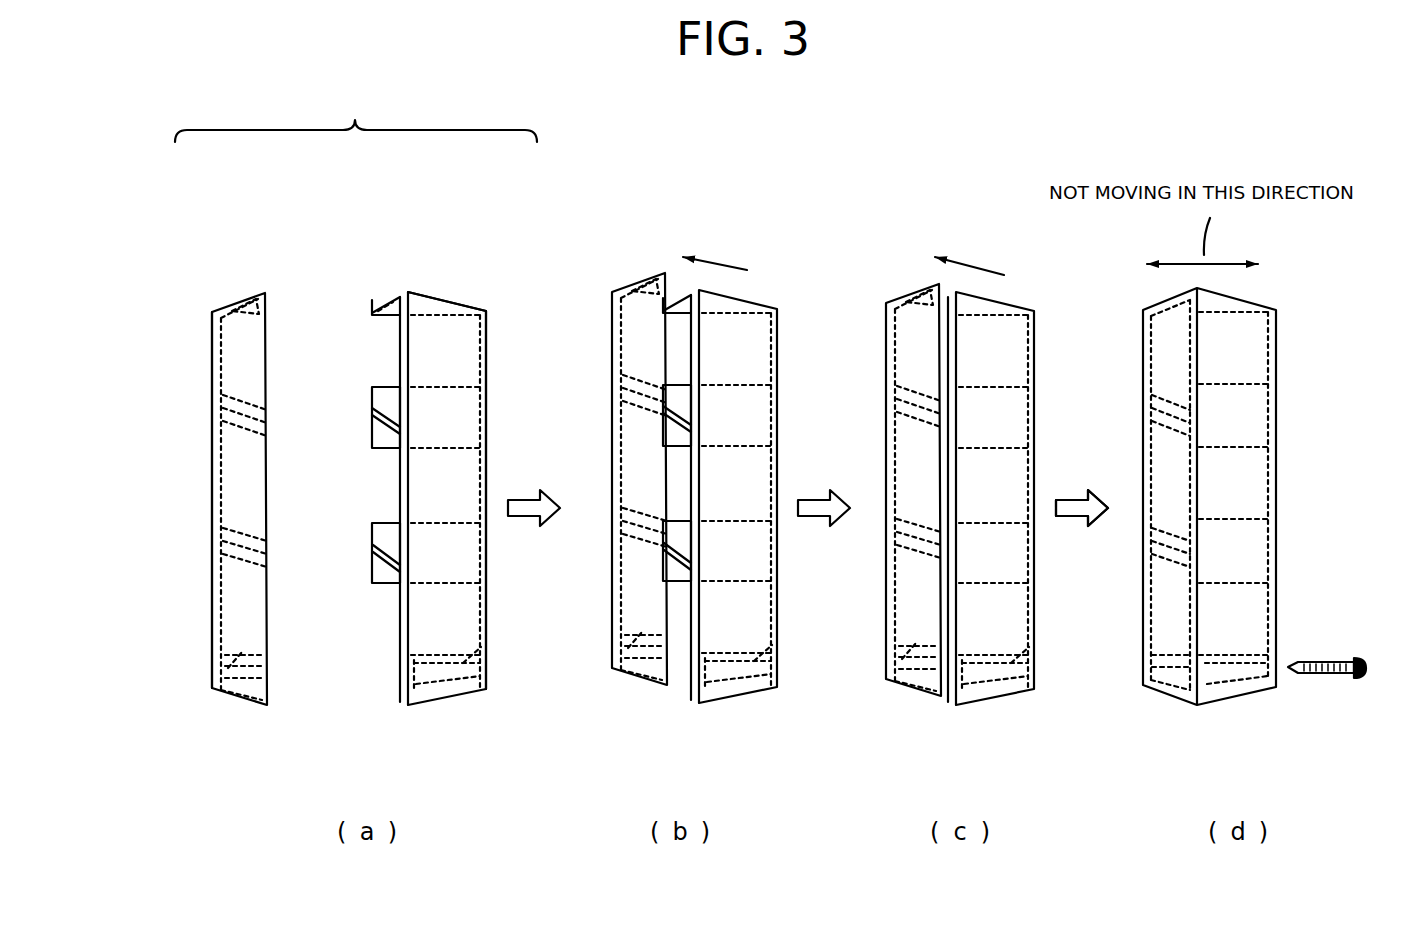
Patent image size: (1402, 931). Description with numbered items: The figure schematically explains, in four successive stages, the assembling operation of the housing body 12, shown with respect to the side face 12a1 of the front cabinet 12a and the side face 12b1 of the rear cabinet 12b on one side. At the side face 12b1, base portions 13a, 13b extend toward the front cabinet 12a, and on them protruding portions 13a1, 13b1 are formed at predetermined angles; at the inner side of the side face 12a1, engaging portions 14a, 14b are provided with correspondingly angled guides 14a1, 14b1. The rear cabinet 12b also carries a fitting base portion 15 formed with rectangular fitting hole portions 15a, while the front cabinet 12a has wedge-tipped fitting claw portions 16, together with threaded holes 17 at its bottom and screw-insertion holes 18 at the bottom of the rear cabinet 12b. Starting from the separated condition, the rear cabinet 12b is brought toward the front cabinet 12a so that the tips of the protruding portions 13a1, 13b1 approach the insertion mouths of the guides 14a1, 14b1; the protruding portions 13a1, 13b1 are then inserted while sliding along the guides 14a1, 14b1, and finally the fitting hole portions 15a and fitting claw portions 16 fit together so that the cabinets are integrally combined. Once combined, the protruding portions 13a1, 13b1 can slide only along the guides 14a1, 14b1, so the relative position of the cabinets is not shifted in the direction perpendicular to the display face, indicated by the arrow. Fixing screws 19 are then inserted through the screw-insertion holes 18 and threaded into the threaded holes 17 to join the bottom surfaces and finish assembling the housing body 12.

The housing body 12 is at (351, 434).
The front cabinet 12a is at (227, 283).
The side face of the front cabinet 12a1 is at (212, 340).
The rear cabinet 12b is at (463, 290).
The side face of the rear cabinet 12b1 is at (459, 358).
The base portion 13a is at (372, 387).
The protruding portion 13a1 is at (372, 413).
The base portion 13b is at (380, 585).
The protruding portion 13b1 is at (372, 548).
The engaging portion 14a is at (274, 392).
The guide 14a1 is at (270, 432).
The engaging portion 14b is at (272, 580).
The guide 14b1 is at (272, 563).
The fitting base portion 15 is at (373, 313).
The fitting hole portion 15a is at (385, 305).
The fitting claw portion 16 is at (255, 297).
The threaded hole 17 is at (212, 688).
The screw-insertion hole 18 is at (487, 652).
The fixing screw 19 is at (1335, 662).